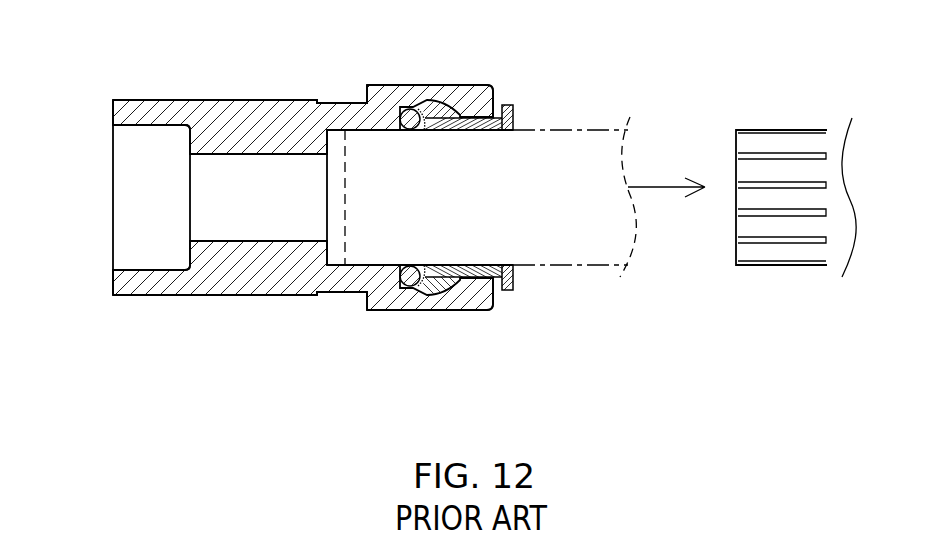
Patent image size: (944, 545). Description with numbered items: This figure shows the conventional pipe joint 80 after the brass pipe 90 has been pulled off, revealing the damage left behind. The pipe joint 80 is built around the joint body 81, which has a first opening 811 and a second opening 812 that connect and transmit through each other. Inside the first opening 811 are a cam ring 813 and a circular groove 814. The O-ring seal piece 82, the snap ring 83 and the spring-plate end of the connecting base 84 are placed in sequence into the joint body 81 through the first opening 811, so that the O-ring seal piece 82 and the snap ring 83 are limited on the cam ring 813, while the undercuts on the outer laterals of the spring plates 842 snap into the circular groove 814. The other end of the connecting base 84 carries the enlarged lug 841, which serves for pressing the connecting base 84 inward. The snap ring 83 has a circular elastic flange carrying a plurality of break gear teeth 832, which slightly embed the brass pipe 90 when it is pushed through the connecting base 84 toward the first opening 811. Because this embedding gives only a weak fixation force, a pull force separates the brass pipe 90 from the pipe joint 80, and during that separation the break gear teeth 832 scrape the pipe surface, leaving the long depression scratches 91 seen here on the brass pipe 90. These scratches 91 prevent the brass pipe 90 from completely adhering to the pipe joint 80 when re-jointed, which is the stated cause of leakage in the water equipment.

The pipe joint 80 is at (115, 88).
The joint body 81 is at (113, 293).
The first opening 811 is at (330, 187).
The second opening 812 is at (143, 193).
The cam ring 813 is at (367, 293).
The circular groove 814 is at (452, 103).
The break gear teeth 832 is at (388, 102).
The O-ring seal piece 82 is at (404, 292).
The snap ring 83 is at (425, 292).
The enlarged lug 841 is at (512, 105).
The spring plates 842 is at (497, 291).
The connecting base 84 is at (517, 268).
The brass pipe 90 is at (817, 128).
The scratches 91 is at (773, 240).